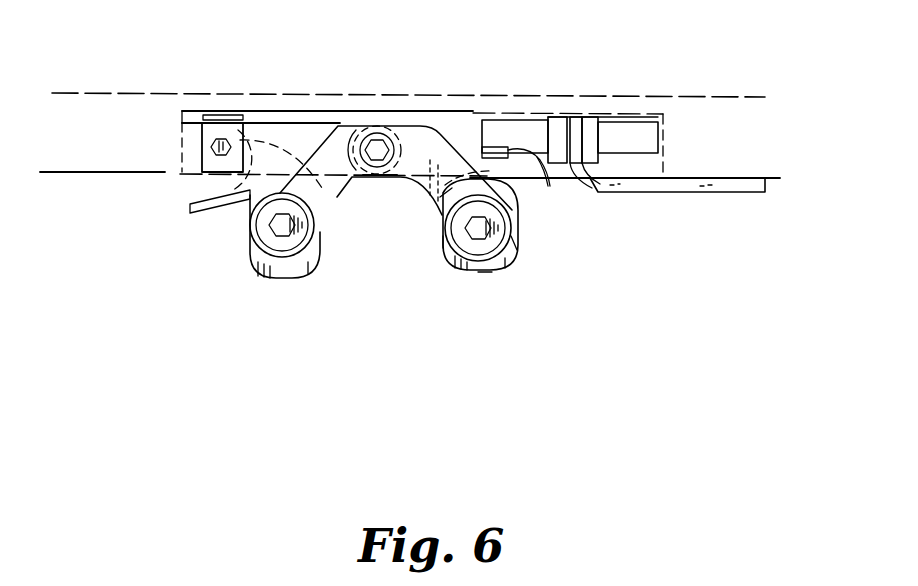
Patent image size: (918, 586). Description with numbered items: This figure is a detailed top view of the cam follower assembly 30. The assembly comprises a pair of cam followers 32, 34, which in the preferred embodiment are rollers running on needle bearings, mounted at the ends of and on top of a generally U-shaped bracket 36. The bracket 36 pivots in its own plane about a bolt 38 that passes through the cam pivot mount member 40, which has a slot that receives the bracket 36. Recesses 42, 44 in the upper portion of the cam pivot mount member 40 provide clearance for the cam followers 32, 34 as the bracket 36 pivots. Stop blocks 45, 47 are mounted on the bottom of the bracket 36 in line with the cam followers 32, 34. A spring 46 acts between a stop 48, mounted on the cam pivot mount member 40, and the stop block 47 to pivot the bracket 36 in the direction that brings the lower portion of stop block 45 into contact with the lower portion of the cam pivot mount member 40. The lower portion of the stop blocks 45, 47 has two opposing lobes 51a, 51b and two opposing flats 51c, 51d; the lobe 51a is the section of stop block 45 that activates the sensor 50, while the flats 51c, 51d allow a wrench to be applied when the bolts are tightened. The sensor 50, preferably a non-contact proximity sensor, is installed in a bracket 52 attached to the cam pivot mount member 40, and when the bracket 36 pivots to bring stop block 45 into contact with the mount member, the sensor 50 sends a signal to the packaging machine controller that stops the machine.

The cam follower assembly 30 is at (180, 251).
The cam follower 32 is at (517, 268).
The cam follower 34 is at (318, 264).
The bracket 36 is at (420, 127).
The bolt 38 is at (377, 140).
The cam pivot mount member 40 is at (131, 148).
The recess 42 is at (541, 182).
The recess 44 is at (244, 177).
The stop block 45 is at (446, 268).
The spring 46 is at (251, 121).
The stop block 47 is at (275, 278).
The stop 48 is at (212, 145).
The sensor 50 is at (491, 125).
The lobe 51a is at (440, 200).
The lobe 51b is at (485, 272).
The flat 51c is at (443, 242).
The flat 51d is at (517, 243).
The bracket 52 is at (671, 186).